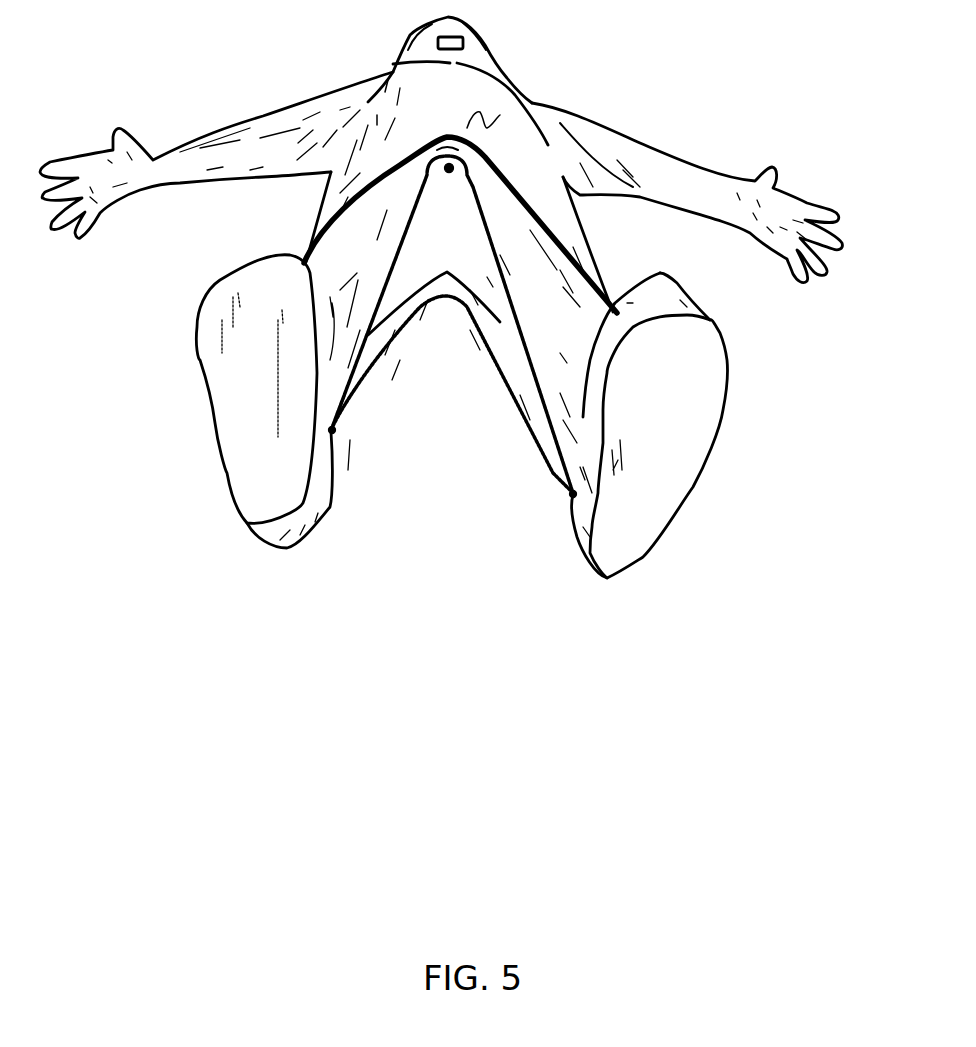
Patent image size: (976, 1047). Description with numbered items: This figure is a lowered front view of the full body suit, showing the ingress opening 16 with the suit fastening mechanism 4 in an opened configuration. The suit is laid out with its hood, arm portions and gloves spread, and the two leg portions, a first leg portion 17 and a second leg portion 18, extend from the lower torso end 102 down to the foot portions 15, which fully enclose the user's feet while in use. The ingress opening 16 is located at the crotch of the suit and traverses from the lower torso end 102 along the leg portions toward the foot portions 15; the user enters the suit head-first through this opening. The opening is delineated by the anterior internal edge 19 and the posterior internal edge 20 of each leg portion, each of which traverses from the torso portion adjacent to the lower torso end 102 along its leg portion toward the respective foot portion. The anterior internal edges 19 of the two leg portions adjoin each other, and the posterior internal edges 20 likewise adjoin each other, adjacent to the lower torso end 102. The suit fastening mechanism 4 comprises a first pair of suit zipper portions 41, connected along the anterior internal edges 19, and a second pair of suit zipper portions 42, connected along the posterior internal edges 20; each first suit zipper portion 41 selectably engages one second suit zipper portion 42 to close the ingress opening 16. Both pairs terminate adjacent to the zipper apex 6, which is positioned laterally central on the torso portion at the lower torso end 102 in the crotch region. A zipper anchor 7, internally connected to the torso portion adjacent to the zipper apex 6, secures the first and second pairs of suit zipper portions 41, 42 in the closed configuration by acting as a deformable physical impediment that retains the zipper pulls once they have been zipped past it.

The suit fastening mechanism 4 is at (487, 425).
The zipper apex 6 is at (447, 141).
The zipper anchor 7 is at (452, 163).
The foot portions 15 is at (148, 482).
The ingress opening 16 is at (450, 268).
The first leg portion 17 is at (600, 228).
The second leg portion 18 is at (288, 232).
The anterior internal edge 19 is at (390, 264).
The posterior internal edge 20 is at (353, 403).
The first pair of suit zipper portions 41 is at (423, 191).
The second pair of suit zipper portions 42 is at (385, 362).
The lower torso end 102 is at (287, 188).